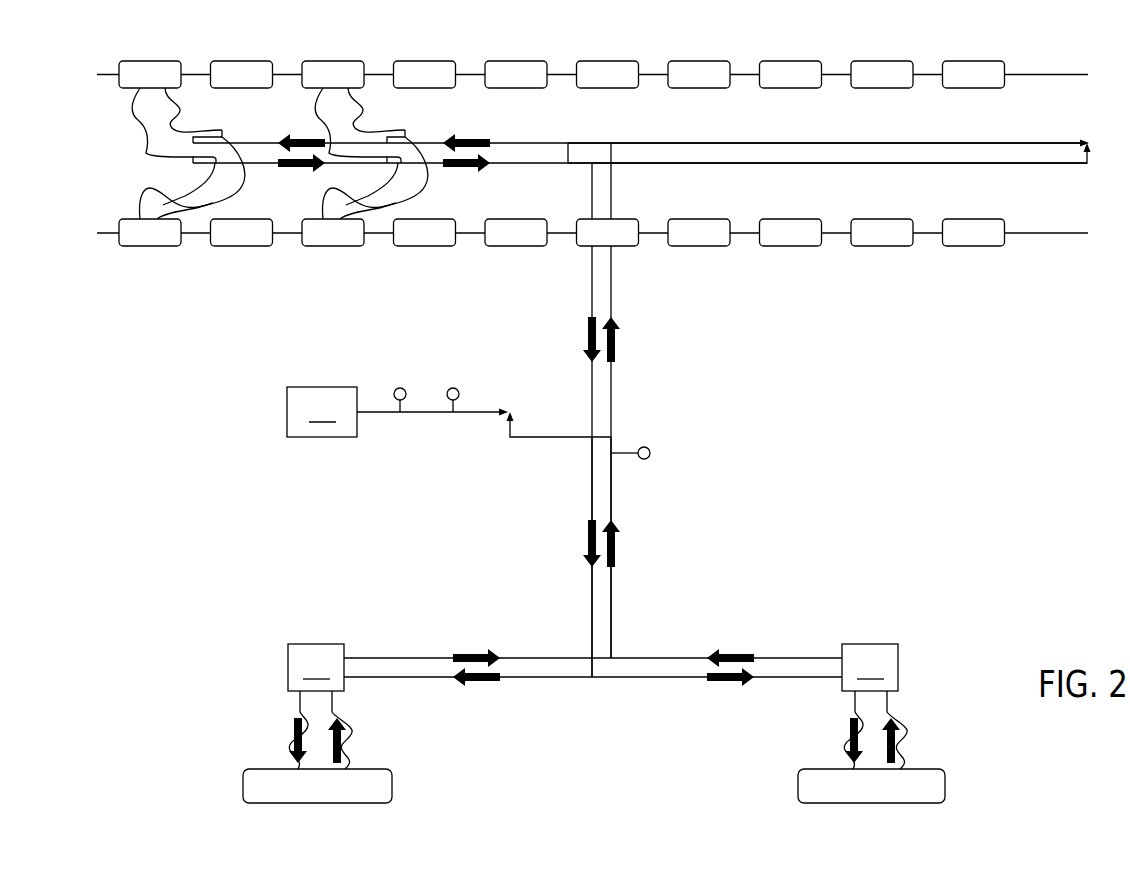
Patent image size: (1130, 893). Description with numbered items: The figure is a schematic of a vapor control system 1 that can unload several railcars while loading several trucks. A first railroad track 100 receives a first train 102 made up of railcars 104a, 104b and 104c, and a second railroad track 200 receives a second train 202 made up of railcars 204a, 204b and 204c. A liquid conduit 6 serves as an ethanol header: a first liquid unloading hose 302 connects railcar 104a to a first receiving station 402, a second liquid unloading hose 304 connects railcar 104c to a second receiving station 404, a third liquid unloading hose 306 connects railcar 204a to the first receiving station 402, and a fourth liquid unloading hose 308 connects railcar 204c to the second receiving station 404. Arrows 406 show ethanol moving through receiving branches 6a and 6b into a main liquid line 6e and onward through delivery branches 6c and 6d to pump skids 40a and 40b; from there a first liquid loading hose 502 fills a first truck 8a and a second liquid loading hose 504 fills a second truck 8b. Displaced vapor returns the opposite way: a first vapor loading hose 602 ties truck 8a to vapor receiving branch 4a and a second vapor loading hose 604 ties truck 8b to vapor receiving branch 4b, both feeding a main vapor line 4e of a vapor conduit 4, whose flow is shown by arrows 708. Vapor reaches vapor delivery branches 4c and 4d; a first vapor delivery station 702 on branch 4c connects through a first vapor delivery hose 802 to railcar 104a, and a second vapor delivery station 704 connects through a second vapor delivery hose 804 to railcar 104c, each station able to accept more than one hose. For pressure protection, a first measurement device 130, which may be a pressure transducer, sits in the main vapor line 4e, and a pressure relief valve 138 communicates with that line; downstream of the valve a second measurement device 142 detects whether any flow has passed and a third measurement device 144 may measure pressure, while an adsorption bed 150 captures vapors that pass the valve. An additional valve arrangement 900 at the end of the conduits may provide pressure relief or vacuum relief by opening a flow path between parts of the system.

The vapor control system 1 is at (843, 396).
The vapor conduit 4 is at (518, 137).
The vapor receiving branch 4a is at (382, 655).
The vapor receiving branch 4b is at (653, 655).
The vapor delivery branch 4c is at (552, 137).
The vapor delivery branch 4d is at (736, 137).
The main vapor line 4e is at (612, 489).
The liquid conduit 6 is at (519, 167).
The receiving branch 6a is at (554, 167).
The receiving branch 6b is at (737, 167).
The delivery branch 6c is at (393, 680).
The delivery branch 6d is at (639, 680).
The main liquid line 6e is at (592, 482).
The first truck 8a is at (243, 780).
The second truck 8b is at (798, 780).
The pump skid 40a is at (316, 667).
The pump skid 40b is at (870, 667).
The first railroad track 100 is at (1065, 70).
The first train 102 is at (972, 60).
The railcar 104a is at (145, 60).
The railcar 104b is at (238, 60).
The railcar 104c is at (329, 60).
The first measurement device 130 is at (652, 453).
The pressure relief valve 138 is at (510, 407).
The second measurement device 142 is at (453, 388).
The third measurement device 144 is at (400, 388).
The adsorption bed 150 is at (397, 412).
The second railroad track 200 is at (1068, 237).
The second train 202 is at (981, 248).
The railcar 204a is at (148, 250).
The railcar 204b is at (240, 250).
The railcar 204c is at (329, 250).
The first liquid unloading hose 302 is at (128, 99).
The second liquid unloading hose 304 is at (345, 100).
The third liquid unloading hose 306 is at (135, 202).
The fourth liquid unloading hose 308 is at (325, 195).
The first receiving station 402 is at (190, 159).
The second receiving station 404 is at (382, 162).
The arrows 406 is at (466, 168).
The first liquid loading hose 502 is at (286, 747).
The second liquid loading hose 504 is at (842, 749).
The first vapor loading hose 602 is at (352, 753).
The second vapor loading hose 604 is at (905, 753).
The first vapor delivery station 702 is at (222, 133).
The second vapor delivery station 704 is at (400, 130).
The arrows 708 is at (471, 135).
The first vapor delivery hose 802 is at (186, 106).
The second vapor delivery hose 804 is at (365, 106).
The valve arrangement 900 is at (1086, 135).